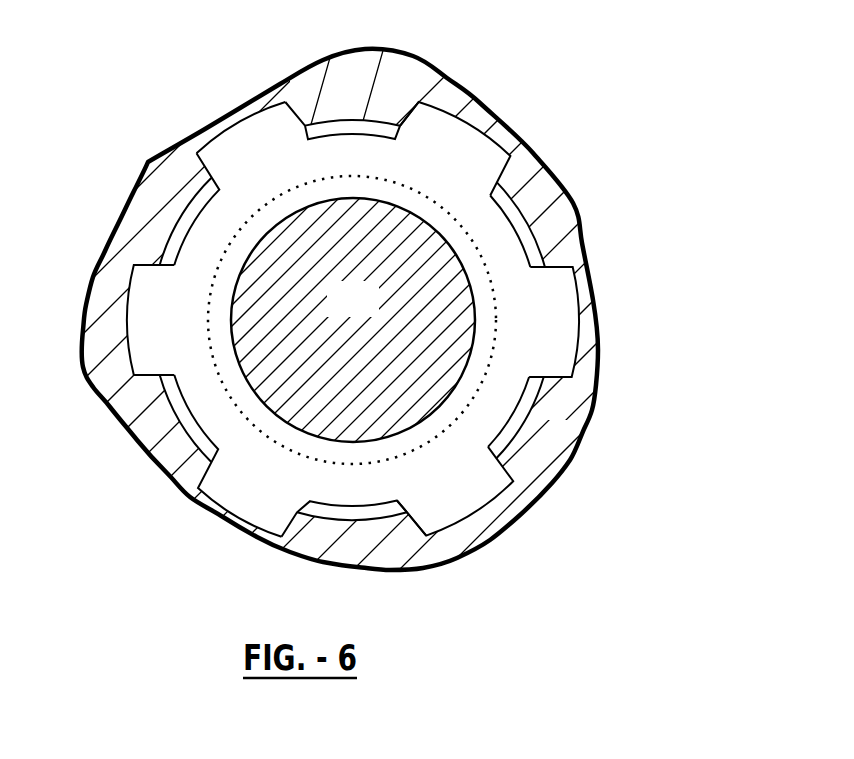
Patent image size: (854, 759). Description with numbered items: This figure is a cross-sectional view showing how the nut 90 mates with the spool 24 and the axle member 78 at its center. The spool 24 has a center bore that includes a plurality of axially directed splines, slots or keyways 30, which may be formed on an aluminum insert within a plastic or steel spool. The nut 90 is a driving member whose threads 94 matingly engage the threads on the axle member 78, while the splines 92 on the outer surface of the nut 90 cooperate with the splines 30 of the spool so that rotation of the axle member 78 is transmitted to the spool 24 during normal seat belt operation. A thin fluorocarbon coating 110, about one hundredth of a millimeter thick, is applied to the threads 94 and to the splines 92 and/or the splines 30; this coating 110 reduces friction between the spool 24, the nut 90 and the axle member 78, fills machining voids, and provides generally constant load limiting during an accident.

The spool 24 is at (188, 480).
The splines 30 is at (197, 203).
The shaft 78 is at (375, 323).
The nut 90 is at (463, 167).
The splines 92 is at (447, 493).
The threads 94 is at (213, 329).
The fluorocarbon coating 110 is at (487, 323).